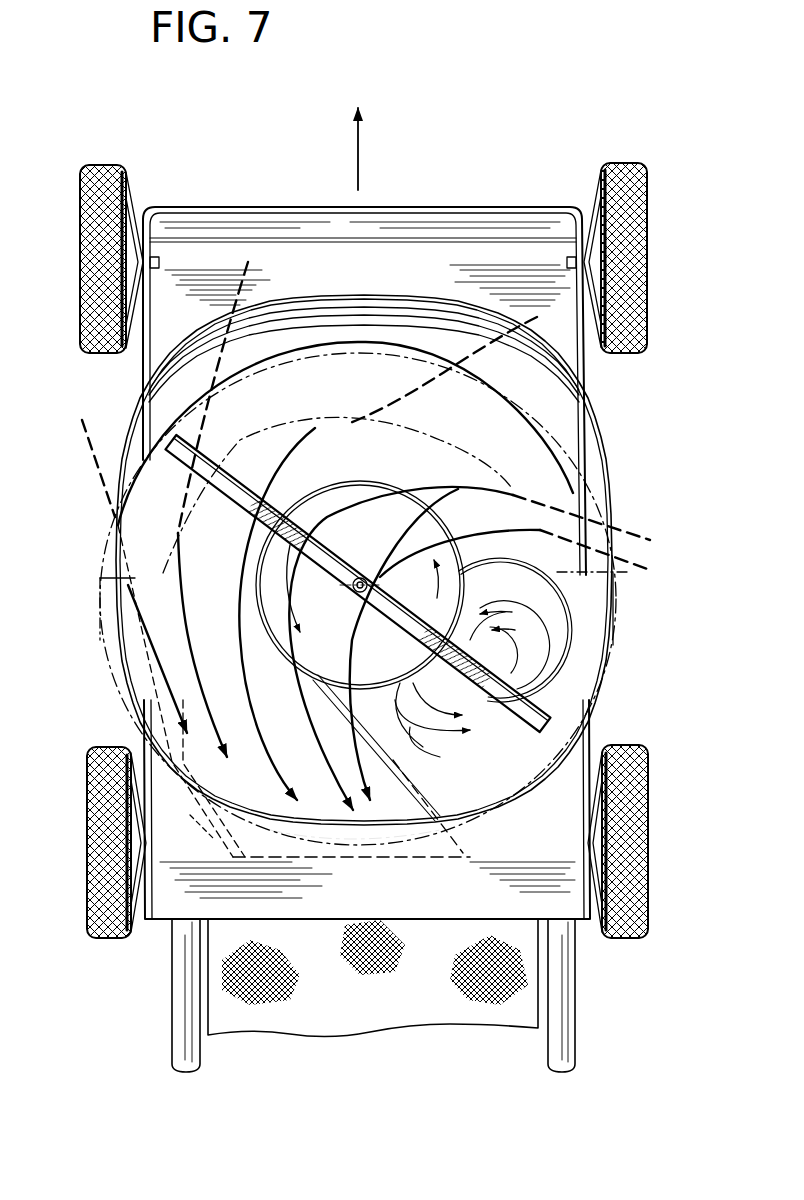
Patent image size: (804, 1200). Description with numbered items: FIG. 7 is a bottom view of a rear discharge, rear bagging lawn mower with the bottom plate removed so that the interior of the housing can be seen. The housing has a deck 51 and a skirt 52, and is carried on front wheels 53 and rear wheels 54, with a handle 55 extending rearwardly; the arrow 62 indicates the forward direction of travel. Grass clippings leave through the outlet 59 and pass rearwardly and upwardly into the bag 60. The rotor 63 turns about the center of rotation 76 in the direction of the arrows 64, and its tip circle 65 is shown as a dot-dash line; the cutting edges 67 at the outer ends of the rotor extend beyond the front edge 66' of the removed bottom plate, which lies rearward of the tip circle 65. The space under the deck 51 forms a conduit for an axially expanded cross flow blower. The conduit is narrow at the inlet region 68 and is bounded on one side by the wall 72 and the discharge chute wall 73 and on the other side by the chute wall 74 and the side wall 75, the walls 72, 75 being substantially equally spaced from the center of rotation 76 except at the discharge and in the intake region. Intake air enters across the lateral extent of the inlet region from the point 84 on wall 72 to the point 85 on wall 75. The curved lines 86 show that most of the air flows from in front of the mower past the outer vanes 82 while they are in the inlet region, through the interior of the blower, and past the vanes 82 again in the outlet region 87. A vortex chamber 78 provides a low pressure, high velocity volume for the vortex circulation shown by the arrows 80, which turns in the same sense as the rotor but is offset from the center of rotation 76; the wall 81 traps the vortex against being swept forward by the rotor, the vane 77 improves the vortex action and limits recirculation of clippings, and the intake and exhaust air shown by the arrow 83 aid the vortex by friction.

The deck 51 is at (370, 274).
The skirt 52 is at (146, 378).
The front wheels 53 is at (88, 234).
The rear wheels 54 is at (90, 838).
The handle 55 is at (176, 1008).
The outlet 59 is at (378, 858).
The bag 60 is at (420, 1028).
The arrow 62 is at (366, 150).
The rotor 63 is at (328, 510).
The arrows 64 is at (304, 606).
The tip circle 65 is at (344, 350).
The front edge of the bottom plate 66' is at (358, 599).
The cutting edges 67 is at (182, 470).
The inlet region 68 is at (446, 414).
The wall 72 is at (122, 640).
The discharge chute wall 73 is at (208, 822).
The chute wall 74 is at (470, 852).
The side wall 75 is at (606, 652).
The center of rotation 76 is at (352, 578).
The vane 77 is at (425, 790).
The vortex chamber 78 is at (515, 662).
The arrows 80 is at (530, 606).
The wall 81 is at (500, 548).
The outer vanes 82 is at (210, 446).
The arrow 83 is at (480, 530).
The point 84 is at (114, 566).
The point 85 is at (606, 566).
The curved lines 86 is at (236, 642).
The outlet region 87 is at (335, 846).